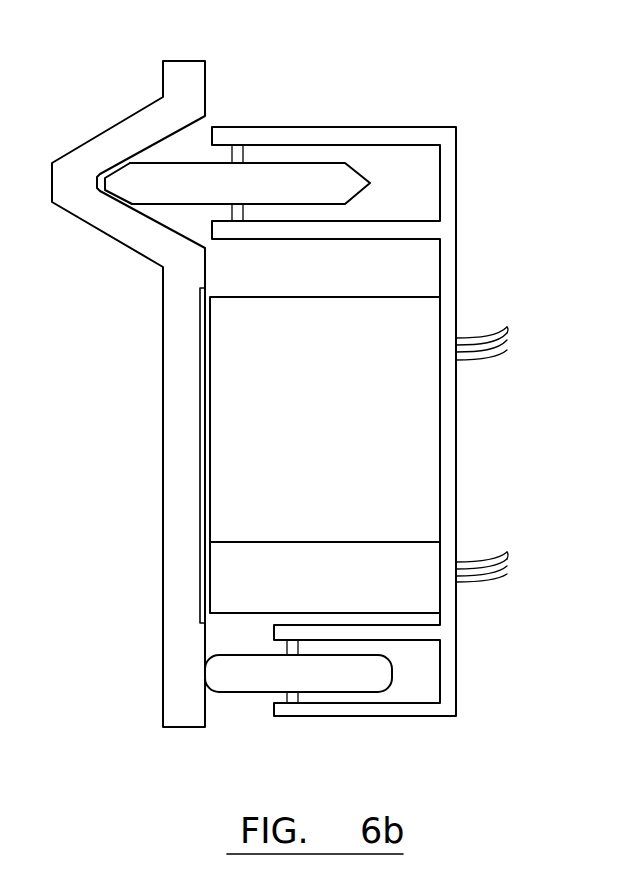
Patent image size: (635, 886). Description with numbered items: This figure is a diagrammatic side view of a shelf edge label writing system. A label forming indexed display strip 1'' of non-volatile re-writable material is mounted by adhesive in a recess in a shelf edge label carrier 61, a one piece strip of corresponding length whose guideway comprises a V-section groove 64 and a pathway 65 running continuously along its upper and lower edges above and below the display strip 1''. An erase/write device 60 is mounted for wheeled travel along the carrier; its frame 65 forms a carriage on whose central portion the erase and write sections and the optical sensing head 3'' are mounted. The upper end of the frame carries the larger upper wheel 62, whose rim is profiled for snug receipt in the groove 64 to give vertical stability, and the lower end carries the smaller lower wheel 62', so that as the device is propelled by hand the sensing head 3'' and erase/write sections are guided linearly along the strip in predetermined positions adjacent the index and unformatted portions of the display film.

The erase/write device 60 is at (476, 643).
The shelf edge label carrier 61 is at (133, 132).
The upper wheel 62 is at (265, 120).
The lower wheel 62' is at (287, 730).
The V-section groove 64 is at (110, 165).
The frame 65 is at (457, 500).
The optical sensing head 3'' is at (392, 583).
The indexed display strip 1'' is at (102, 455).